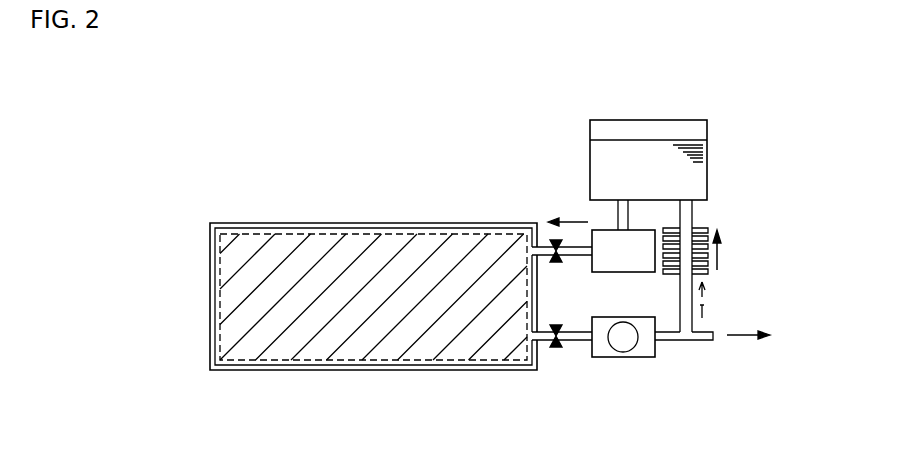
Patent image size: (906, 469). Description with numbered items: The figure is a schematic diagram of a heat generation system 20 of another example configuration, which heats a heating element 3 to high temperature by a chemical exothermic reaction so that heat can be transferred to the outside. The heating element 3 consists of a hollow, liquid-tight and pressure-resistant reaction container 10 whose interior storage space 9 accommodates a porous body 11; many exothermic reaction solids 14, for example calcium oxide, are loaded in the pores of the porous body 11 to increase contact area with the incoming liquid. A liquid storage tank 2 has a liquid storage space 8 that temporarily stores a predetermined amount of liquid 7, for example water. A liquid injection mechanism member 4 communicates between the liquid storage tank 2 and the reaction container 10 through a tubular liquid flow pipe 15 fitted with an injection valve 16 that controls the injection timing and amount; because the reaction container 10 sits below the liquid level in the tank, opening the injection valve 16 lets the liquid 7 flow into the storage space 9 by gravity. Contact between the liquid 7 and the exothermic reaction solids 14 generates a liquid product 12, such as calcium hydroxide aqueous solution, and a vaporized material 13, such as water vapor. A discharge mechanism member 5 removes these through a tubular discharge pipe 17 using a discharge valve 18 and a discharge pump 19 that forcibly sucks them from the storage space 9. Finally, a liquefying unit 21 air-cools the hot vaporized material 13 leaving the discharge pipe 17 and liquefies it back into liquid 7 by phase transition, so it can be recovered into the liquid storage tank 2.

The liquid storage tank 2 is at (728, 142).
The heating element 3 is at (429, 199).
The liquid injection mechanism member 4 is at (558, 189).
The discharge mechanism member 5 is at (608, 402).
The liquid 7 is at (572, 220).
The liquid storage space 8 is at (685, 133).
The storage space 9 is at (516, 227).
The reaction container 10 is at (348, 224).
The porous body 11 is at (290, 250).
The liquid product 12 is at (728, 336).
The vaporized material 13 is at (727, 297).
The exothermic reaction solids 14 is at (373, 297).
The liquid flow pipe 15 is at (620, 260).
The injection valve 16 is at (562, 263).
The discharge pipe 17 is at (668, 347).
The discharge valve 18 is at (560, 347).
The discharge pump 19 is at (618, 358).
The heat generation system 20 is at (283, 146).
The liquefying unit 21 is at (733, 225).